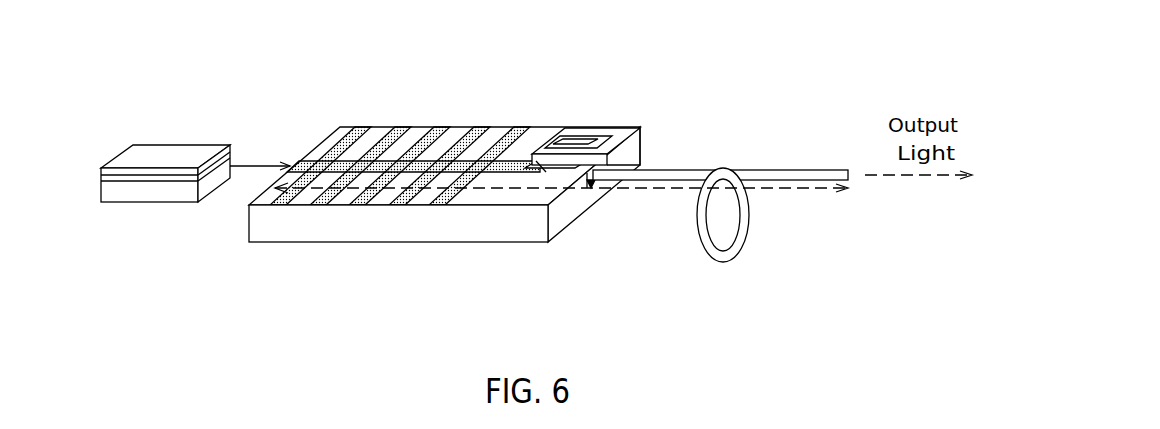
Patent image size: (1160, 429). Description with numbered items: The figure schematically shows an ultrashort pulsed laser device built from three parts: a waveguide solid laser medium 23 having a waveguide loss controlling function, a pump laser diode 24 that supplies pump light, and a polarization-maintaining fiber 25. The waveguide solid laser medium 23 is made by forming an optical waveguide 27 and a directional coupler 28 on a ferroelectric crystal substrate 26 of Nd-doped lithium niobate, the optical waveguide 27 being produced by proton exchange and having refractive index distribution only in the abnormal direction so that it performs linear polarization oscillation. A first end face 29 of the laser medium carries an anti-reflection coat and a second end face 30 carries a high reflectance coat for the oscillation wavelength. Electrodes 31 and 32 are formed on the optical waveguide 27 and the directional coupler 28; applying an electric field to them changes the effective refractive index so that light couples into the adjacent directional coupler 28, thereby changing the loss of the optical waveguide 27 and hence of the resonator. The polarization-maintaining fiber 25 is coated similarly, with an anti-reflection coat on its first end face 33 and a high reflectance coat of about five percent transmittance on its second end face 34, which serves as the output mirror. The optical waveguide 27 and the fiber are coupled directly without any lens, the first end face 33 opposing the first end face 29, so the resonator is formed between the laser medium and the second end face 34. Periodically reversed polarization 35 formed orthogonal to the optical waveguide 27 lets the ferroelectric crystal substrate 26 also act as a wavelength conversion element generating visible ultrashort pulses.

The waveguide solid laser medium 23 is at (460, 246).
The pump laser diode 24 is at (173, 143).
The polarization-maintaining fiber 25 is at (747, 232).
The ferroelectric crystal substrate 26 is at (370, 227).
The optical waveguide 27 is at (523, 157).
The directional coupler 28 is at (620, 130).
The first end face 29 is at (590, 186).
The second end face 30 is at (298, 162).
The electrode 31 is at (541, 162).
The electrode 32 is at (565, 146).
The first end face 33 is at (590, 160).
The second end face 34 is at (848, 175).
The periodically reversed polarization 35 is at (271, 215).